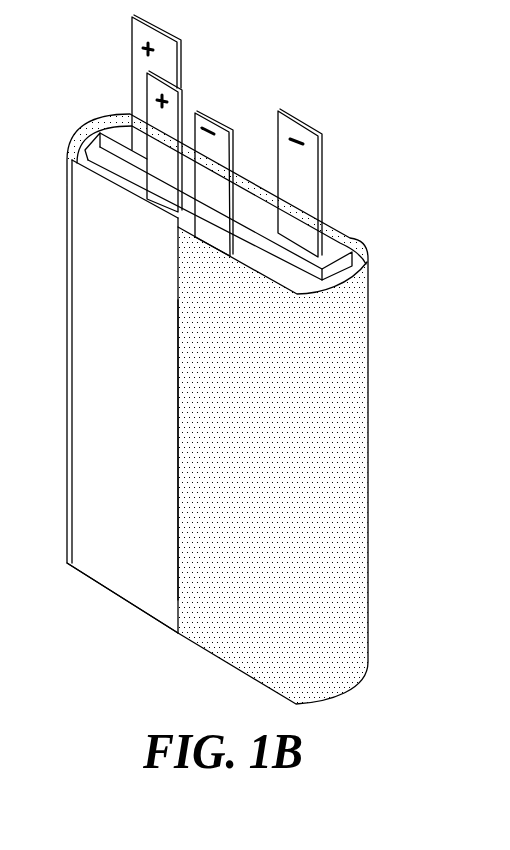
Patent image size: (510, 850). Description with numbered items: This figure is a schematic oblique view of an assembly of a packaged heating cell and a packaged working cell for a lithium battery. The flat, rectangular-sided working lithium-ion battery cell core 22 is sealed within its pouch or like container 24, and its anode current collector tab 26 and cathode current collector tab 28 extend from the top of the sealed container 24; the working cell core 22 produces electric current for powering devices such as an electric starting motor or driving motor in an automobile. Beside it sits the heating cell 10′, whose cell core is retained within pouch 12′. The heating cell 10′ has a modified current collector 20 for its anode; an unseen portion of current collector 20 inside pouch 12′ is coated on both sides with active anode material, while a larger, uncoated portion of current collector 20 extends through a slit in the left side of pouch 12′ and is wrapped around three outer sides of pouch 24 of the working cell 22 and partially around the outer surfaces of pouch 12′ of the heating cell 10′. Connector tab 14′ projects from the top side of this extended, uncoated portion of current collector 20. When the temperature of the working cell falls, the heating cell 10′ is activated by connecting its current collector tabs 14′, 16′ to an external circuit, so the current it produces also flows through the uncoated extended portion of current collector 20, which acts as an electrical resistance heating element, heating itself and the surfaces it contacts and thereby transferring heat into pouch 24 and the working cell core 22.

The heating cell 10′ is at (84, 581).
The pouch 12′ is at (137, 594).
The connector tab 14′ is at (222, 148).
The current collector tab 16′ is at (158, 163).
The extended current collector foil 20 is at (357, 558).
The working lithium-ion battery cell core 22 is at (397, 451).
The pouch 24 is at (336, 254).
The anode current collector tab 26 is at (305, 175).
The cathode current collector tab 28 is at (132, 85).